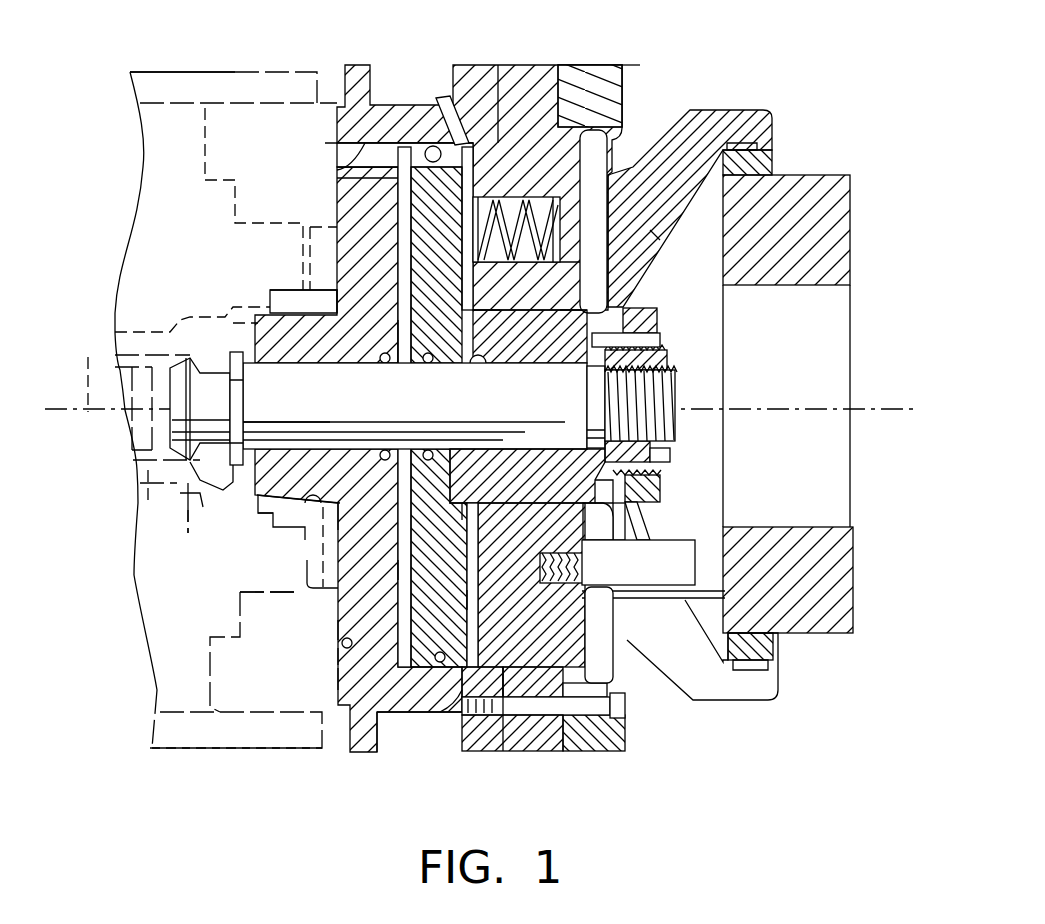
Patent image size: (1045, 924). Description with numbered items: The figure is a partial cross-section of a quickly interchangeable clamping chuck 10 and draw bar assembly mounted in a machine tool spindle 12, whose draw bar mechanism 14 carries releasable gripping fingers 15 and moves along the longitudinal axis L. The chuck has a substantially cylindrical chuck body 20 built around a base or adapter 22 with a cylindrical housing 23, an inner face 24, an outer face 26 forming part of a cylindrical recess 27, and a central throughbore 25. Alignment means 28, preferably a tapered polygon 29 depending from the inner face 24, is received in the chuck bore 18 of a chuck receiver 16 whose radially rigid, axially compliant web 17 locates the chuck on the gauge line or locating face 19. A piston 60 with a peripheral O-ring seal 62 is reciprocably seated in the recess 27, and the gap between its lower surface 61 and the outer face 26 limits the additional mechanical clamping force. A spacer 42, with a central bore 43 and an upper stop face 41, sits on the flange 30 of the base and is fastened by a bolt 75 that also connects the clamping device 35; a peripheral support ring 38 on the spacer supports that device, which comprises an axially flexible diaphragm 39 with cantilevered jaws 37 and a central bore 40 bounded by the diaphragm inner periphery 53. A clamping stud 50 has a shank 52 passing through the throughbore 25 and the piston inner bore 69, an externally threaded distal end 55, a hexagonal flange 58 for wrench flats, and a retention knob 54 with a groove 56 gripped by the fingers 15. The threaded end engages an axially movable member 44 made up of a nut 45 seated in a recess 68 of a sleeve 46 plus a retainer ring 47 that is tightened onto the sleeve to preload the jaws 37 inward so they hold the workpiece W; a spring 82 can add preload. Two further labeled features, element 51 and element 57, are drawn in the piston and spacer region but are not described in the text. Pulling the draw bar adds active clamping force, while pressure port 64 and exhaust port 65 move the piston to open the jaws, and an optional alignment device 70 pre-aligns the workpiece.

The clamping chuck 10 is at (626, 54).
The machine tool spindle 12 is at (222, 63).
The draw bar mechanism 14 is at (131, 494).
The gripping devices or fingers 15 is at (185, 533).
The chuck receiver 16 is at (312, 693).
The web 17 is at (268, 570).
The chuck bore 18 is at (318, 556).
The gauge line or locating face 19 is at (340, 657).
The chuck body 20 is at (476, 56).
The base or adapter 22 is at (395, 708).
The housing 23 is at (410, 707).
The inner face 24 is at (340, 675).
The throughbore 25 is at (347, 476).
The outer face 26 is at (340, 628).
The cylindrical recess 27 is at (500, 663).
The alignment means 28 is at (301, 504).
The tapered polygon 29 is at (270, 513).
The flange 30 is at (513, 735).
The workpiece clamping device 35 is at (706, 102).
The cantilevered jaws 37 is at (668, 147).
The peripheral support ring 38 is at (617, 745).
The axially flexible diaphragm 39 is at (633, 267).
The central bore 40 is at (575, 352).
The upper stop face 41 is at (628, 503).
The spacer 42 is at (540, 541).
The central bore 43 is at (470, 333).
The axially movable member 44 is at (675, 492).
The internally threaded nut 45 is at (670, 456).
The sleeve 46 is at (505, 483).
The retainer ring 47 is at (660, 318).
The clamping stud 50 is at (347, 505).
The sleeve bore 51 is at (477, 600).
The shank 52 is at (398, 397).
The inner periphery 53 is at (587, 317).
The pull stub or retention knob 54 is at (177, 415).
The externally threaded distal end 55 is at (662, 384).
The clamping recess or groove 56 is at (207, 362).
The piston skirt 57 is at (462, 512).
The hexagonal portion flange 58 is at (245, 396).
The piston 60 is at (450, 256).
The lower surface 61 is at (410, 567).
The peripheral O-ring seal 62 is at (453, 715).
The pressure port 64 is at (372, 170).
The exhaust port 65 is at (440, 97).
The recess 68 is at (617, 433).
The inner bore 69 is at (497, 360).
The workpiece alignment device 70 is at (645, 578).
The bolt 75 is at (587, 750).
The spring 82 is at (490, 187).
The longitudinal axis L is at (88, 357).
The workpiece W is at (790, 195).